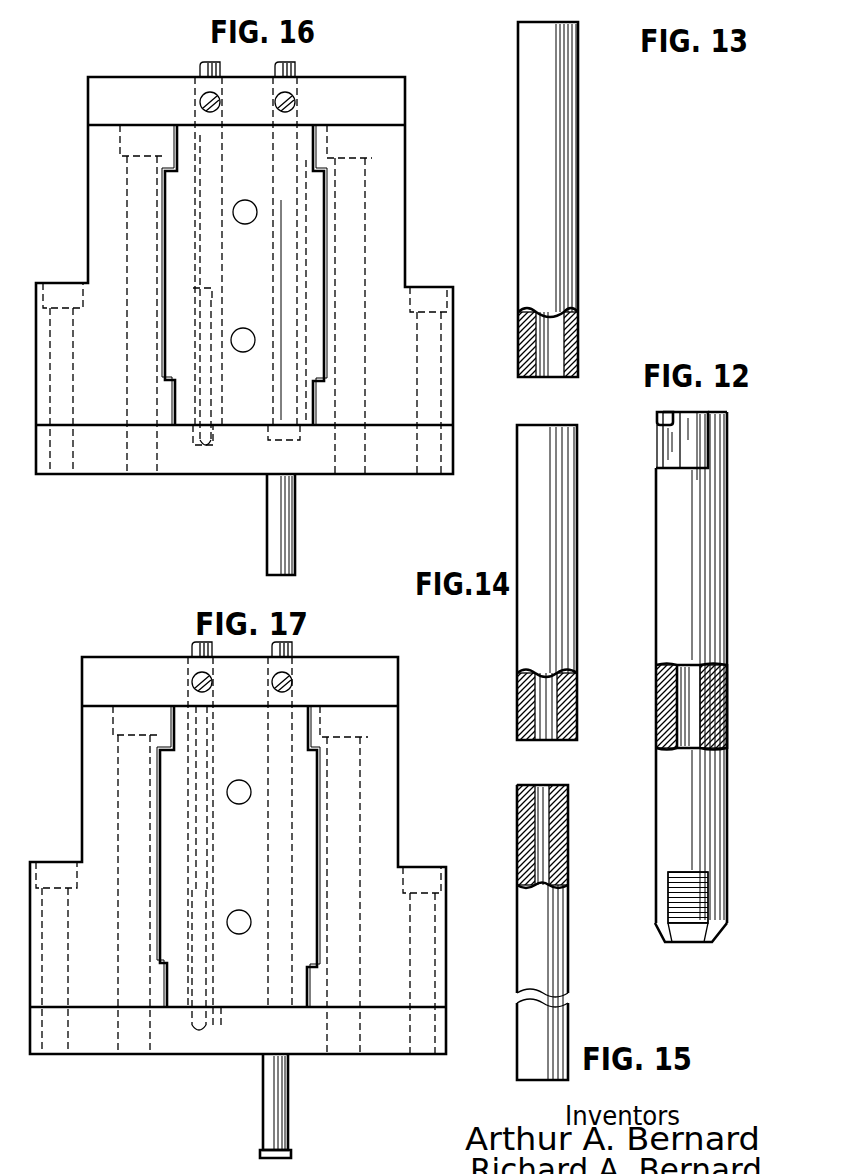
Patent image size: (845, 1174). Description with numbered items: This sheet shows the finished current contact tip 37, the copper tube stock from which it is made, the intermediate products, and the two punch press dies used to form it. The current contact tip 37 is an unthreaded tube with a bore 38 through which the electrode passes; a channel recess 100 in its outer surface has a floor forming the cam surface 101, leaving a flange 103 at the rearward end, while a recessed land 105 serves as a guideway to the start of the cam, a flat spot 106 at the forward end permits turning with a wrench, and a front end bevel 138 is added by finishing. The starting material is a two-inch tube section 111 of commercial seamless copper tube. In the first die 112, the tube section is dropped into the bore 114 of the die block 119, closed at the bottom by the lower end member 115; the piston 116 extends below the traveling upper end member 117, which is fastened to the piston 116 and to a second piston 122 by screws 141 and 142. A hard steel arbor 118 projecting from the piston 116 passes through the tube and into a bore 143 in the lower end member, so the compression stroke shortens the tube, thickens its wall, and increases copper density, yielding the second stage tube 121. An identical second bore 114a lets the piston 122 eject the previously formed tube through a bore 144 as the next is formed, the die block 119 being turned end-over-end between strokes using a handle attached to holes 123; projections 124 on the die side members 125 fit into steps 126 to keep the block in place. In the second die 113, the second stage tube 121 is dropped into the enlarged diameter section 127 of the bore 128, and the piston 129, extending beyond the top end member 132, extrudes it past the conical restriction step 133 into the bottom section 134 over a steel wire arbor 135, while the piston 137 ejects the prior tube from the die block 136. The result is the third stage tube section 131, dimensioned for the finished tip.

In FIG. 12, the current contact tip 37 is at (727, 594).
In FIG. 12, the current contact tip bore 38 is at (697, 690).
In FIG. 12, the channel recess 100 is at (658, 448).
In FIG. 12, the cam surface 101 is at (657, 460).
In FIG. 12, the flange 103 is at (657, 414).
In FIG. 12, the recessed land 105 is at (690, 428).
In FIG. 12, the flat spot 106 is at (700, 892).
In FIG. 13, the tube section 111 is at (580, 176).
In FIG. 16, the punch press die 112 is at (404, 152).
In FIG. 17, the punch press die 113 is at (399, 726).
In FIG. 16, the bore 114 is at (199, 206).
In FIG. 16, the second bore 114a is at (295, 242).
In FIG. 16, the lower end member 115 is at (100, 472).
In FIG. 16, the piston 116 is at (205, 162).
In FIG. 16, the upper end member 117 is at (135, 90).
In FIG. 16, the arbor 118 is at (212, 320).
In FIG. 16, the die block 119 is at (315, 350).
In FIG. 16, the second stage tube 121 is at (195, 330).
In FIG. 14, the second stage tube 121 is at (568, 588).
In FIG. 16, the second piston 122 is at (285, 275).
In FIG. 16, the holes 123 is at (240, 210).
In FIG. 16, the projections 124 is at (182, 132).
In FIG. 17, the projections 124 is at (178, 712).
In FIG. 16, the die side members 125 is at (88, 247).
In FIG. 16, the steps 126 is at (176, 146).
In FIG. 17, the enlarged diameter section 127 is at (199, 785).
In FIG. 17, the bore 128 is at (194, 934).
In FIG. 17, the piston 129 is at (222, 735).
In FIG. 17, the third stage tube section 131 is at (205, 1010).
In FIG. 15, the third stage tube section 131 is at (568, 971).
In FIG. 17, the top end member 132 is at (340, 665).
In FIG. 17, the conical restriction step 133 is at (212, 858).
In FIG. 17, the bottom section 134 is at (192, 959).
In FIG. 17, the wire arbor 135 is at (198, 975).
In FIG. 17, the die block 136 is at (313, 838).
In FIG. 17, the piston 137 is at (300, 712).
In FIG. 12, the front end bevel 138 is at (717, 930).
In FIG. 16, the screw 141 is at (222, 97).
In FIG. 16, the screw 142 is at (296, 97).
In FIG. 16, the bore 143 is at (208, 462).
In FIG. 16, the bore 144 is at (296, 487).